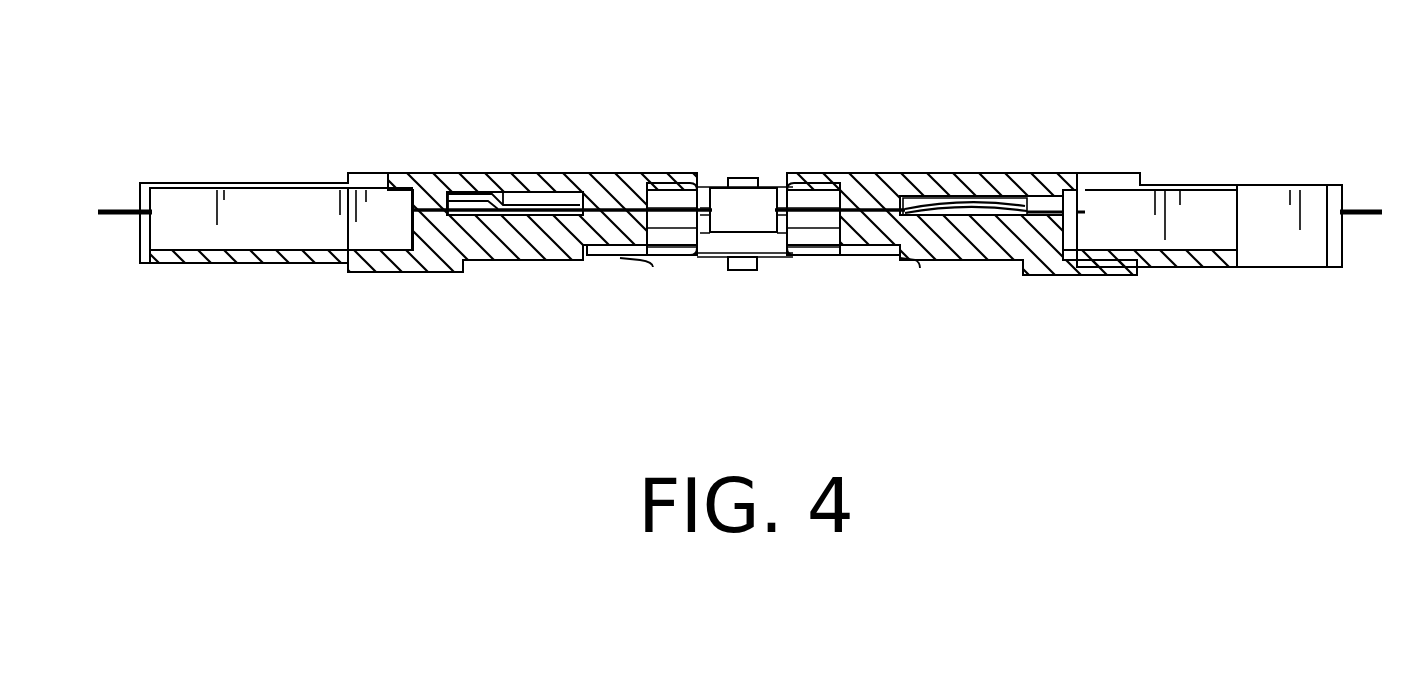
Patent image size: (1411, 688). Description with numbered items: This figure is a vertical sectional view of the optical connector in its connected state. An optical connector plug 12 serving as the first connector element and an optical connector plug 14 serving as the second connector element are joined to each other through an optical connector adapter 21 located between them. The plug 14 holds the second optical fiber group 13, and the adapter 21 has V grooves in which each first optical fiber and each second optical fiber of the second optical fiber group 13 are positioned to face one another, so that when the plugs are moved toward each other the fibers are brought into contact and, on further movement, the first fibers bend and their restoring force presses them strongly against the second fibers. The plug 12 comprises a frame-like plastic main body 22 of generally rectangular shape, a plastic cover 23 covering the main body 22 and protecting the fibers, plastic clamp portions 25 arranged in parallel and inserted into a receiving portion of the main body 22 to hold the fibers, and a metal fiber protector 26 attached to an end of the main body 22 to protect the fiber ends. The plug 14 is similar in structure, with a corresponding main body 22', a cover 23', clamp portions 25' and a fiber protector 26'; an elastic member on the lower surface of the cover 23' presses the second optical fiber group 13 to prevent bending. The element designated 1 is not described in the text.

The lead wire 1 is at (1368, 211).
The optical connector plug 12 is at (1102, 278).
The second optical fiber group 13 is at (117, 206).
The optical connector plug 14 is at (370, 276).
The optical connector adapter 21 is at (740, 270).
The main body 22 is at (962, 265).
The main body 22' is at (522, 265).
The cover 23 is at (930, 143).
The cover 23' is at (562, 141).
The clamp portions 25 is at (1202, 169).
The clamp portions 25' is at (276, 169).
The fiber protector 26 is at (853, 270).
The fiber protector 26' is at (642, 270).